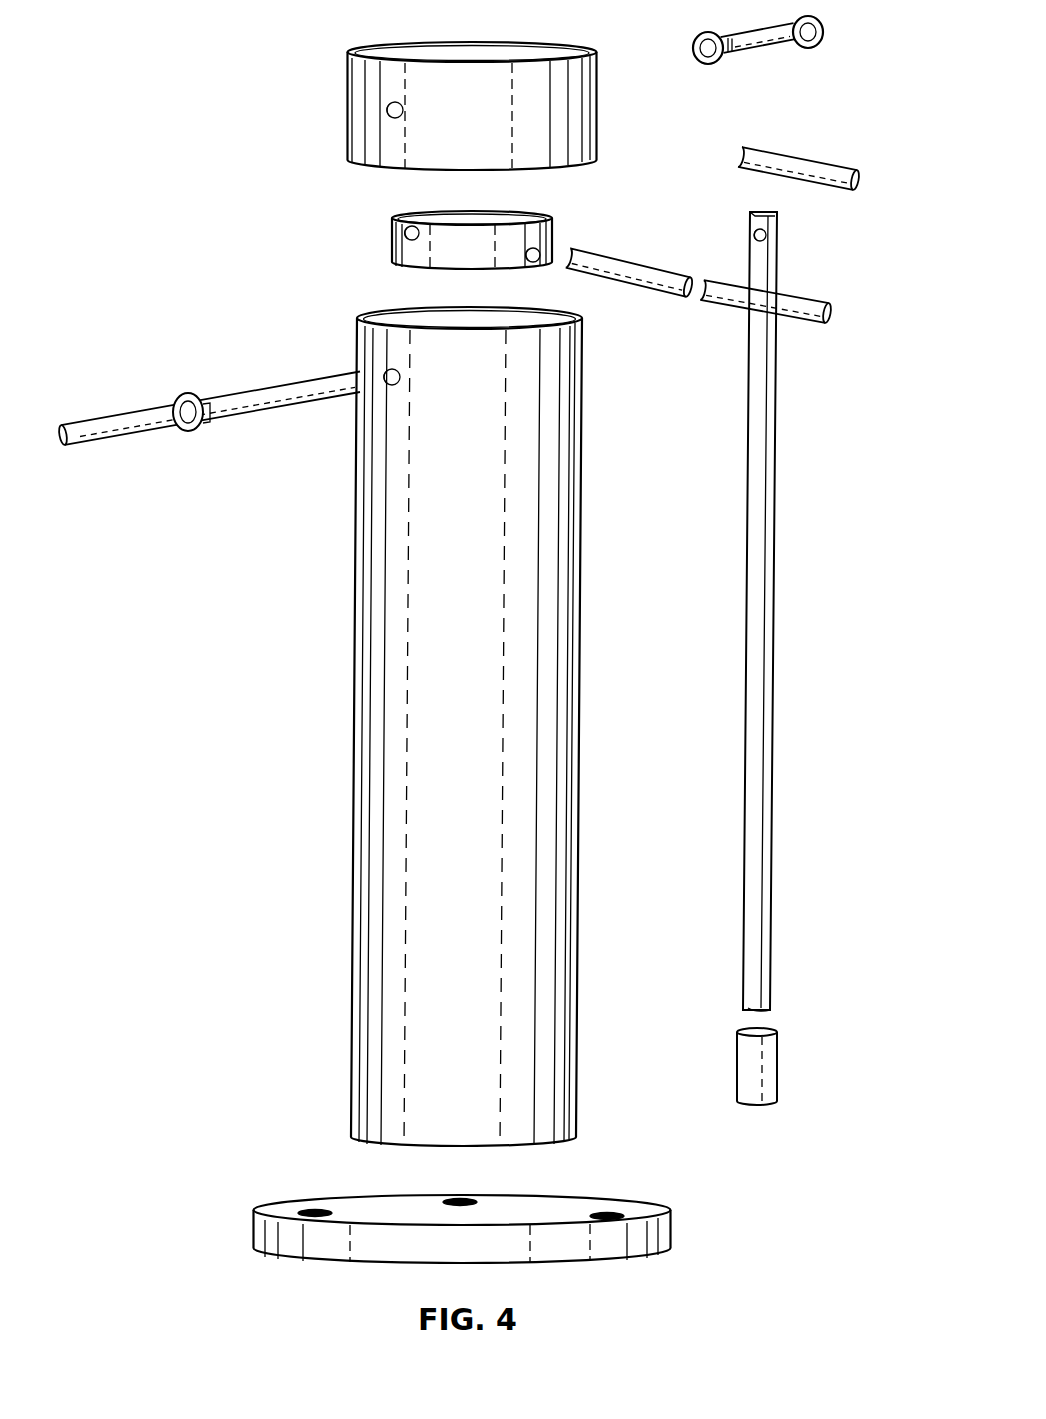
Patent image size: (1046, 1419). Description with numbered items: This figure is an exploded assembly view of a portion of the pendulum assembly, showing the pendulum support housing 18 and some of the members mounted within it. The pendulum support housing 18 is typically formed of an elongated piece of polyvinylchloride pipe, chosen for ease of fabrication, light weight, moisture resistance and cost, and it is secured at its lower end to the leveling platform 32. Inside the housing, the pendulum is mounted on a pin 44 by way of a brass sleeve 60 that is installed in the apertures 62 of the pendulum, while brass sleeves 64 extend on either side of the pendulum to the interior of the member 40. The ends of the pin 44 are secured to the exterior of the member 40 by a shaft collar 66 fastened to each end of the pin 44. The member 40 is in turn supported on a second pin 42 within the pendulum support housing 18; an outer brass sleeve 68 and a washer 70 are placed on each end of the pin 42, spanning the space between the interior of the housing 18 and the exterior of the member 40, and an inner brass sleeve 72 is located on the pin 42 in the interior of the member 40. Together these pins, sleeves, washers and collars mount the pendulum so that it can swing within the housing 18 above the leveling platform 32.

The pendulum support housing 18 is at (375, 531).
The leveling platform 32 is at (663, 1235).
The member 40 is at (397, 238).
The pin 42 is at (580, 113).
The pin 44 is at (742, 302).
The brass sleeve 60 is at (764, 28).
The apertures 62 is at (770, 445).
The brass sleeves 64 is at (795, 155).
The shaft collar 66 is at (757, 1067).
The outer brass sleeve 68 is at (126, 409).
The washer 70 is at (185, 394).
The inner brass sleeve 72 is at (609, 262).